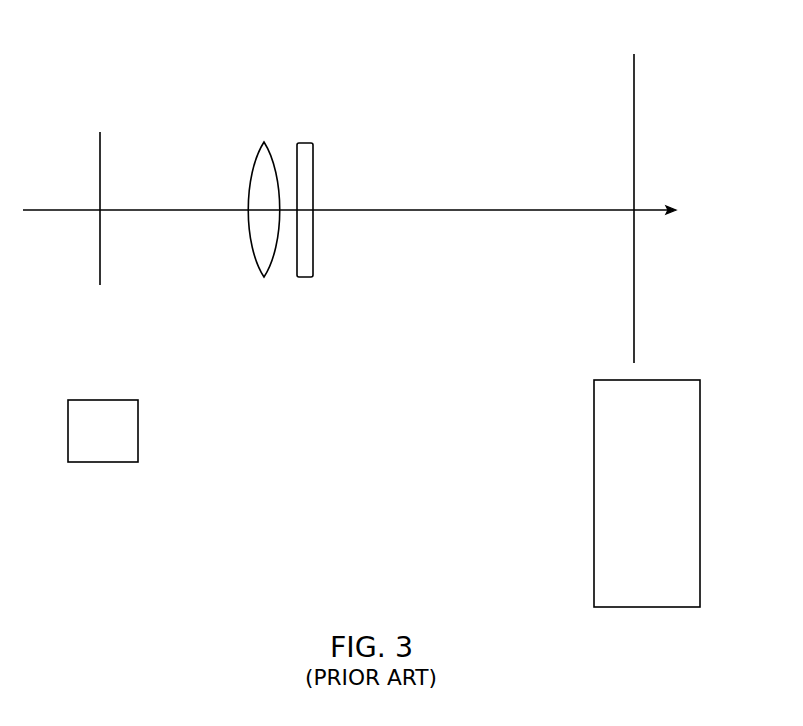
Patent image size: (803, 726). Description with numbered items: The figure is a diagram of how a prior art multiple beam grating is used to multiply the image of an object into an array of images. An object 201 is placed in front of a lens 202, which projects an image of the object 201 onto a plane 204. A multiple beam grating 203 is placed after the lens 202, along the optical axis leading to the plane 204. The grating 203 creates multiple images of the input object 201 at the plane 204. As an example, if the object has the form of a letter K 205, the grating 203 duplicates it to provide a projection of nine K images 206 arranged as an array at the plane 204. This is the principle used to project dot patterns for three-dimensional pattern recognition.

The object 201 is at (100, 150).
The lens 202 is at (263, 142).
The multiple beam grating 203 is at (306, 143).
The plane 204 is at (634, 93).
The K-shaped object 205 is at (97, 400).
The K images 206 is at (594, 432).